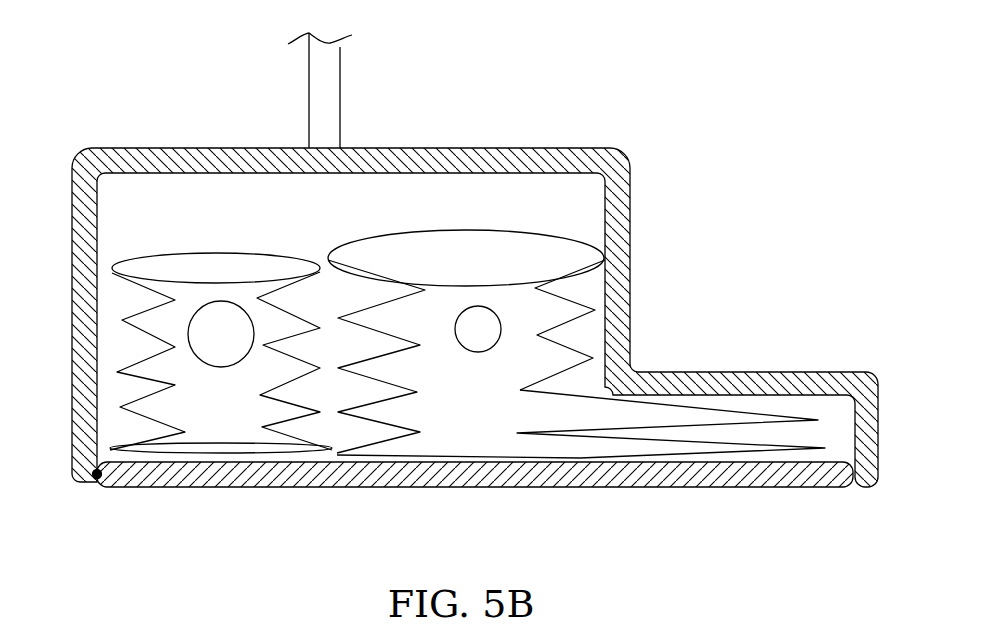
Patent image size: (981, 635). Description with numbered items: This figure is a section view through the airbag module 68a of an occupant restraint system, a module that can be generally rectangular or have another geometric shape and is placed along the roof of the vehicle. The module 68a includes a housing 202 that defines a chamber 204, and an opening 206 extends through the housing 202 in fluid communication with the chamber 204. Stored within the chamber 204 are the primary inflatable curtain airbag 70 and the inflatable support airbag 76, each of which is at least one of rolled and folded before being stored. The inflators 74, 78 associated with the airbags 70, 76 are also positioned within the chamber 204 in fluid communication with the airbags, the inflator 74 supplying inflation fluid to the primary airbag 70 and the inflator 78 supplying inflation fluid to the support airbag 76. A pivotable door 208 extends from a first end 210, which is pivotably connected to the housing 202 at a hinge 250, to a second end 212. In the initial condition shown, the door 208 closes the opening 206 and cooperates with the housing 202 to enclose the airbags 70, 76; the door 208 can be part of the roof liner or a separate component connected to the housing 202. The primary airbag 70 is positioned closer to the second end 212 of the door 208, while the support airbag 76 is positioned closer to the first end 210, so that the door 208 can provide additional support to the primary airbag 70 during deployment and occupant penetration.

The airbag module 68a is at (697, 106).
The housing 202 is at (150, 165).
The chamber 204 is at (594, 290).
The primary inflatable curtain airbag 70 is at (732, 410).
The inflator 74 is at (474, 341).
The inflatable support airbag 76 is at (122, 320).
The inflator 78 is at (217, 350).
The opening 206 is at (838, 449).
The pivotable door 208 is at (473, 487).
The first end 210 is at (100, 513).
The second end 212 is at (853, 503).
The hinge 250 is at (88, 484).